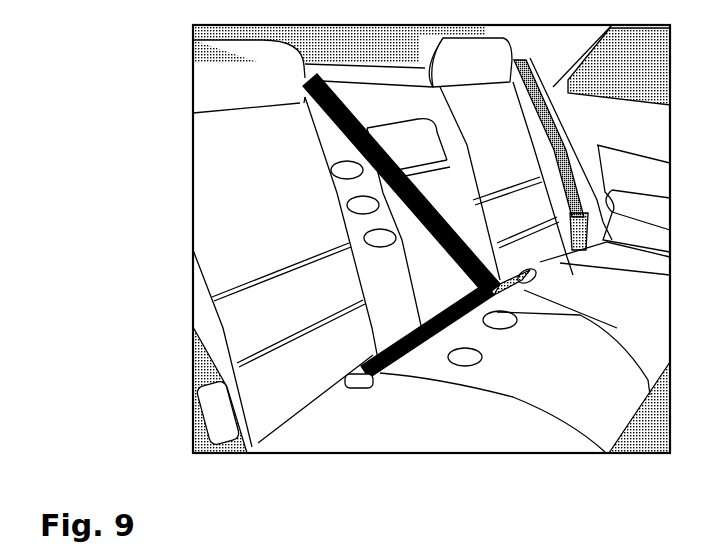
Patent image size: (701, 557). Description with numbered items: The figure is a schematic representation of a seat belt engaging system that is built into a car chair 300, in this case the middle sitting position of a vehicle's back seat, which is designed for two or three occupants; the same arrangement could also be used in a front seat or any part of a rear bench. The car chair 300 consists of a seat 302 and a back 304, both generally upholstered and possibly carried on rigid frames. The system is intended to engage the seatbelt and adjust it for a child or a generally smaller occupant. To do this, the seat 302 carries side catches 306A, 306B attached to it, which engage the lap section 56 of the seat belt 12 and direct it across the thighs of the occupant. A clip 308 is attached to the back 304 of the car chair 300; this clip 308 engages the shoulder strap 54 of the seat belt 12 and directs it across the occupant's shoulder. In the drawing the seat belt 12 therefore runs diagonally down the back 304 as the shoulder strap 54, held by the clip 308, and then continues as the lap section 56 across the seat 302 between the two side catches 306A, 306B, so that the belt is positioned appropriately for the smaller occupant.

The seat belt 12 is at (343, 135).
The shoulder strap 54 is at (398, 168).
The lap section 56 is at (448, 318).
The car chair 300 is at (412, 269).
The seat 302 is at (563, 354).
The back 304 is at (462, 184).
The side catch 306A is at (467, 367).
The side catch 306B is at (565, 318).
The clip 308 is at (349, 201).